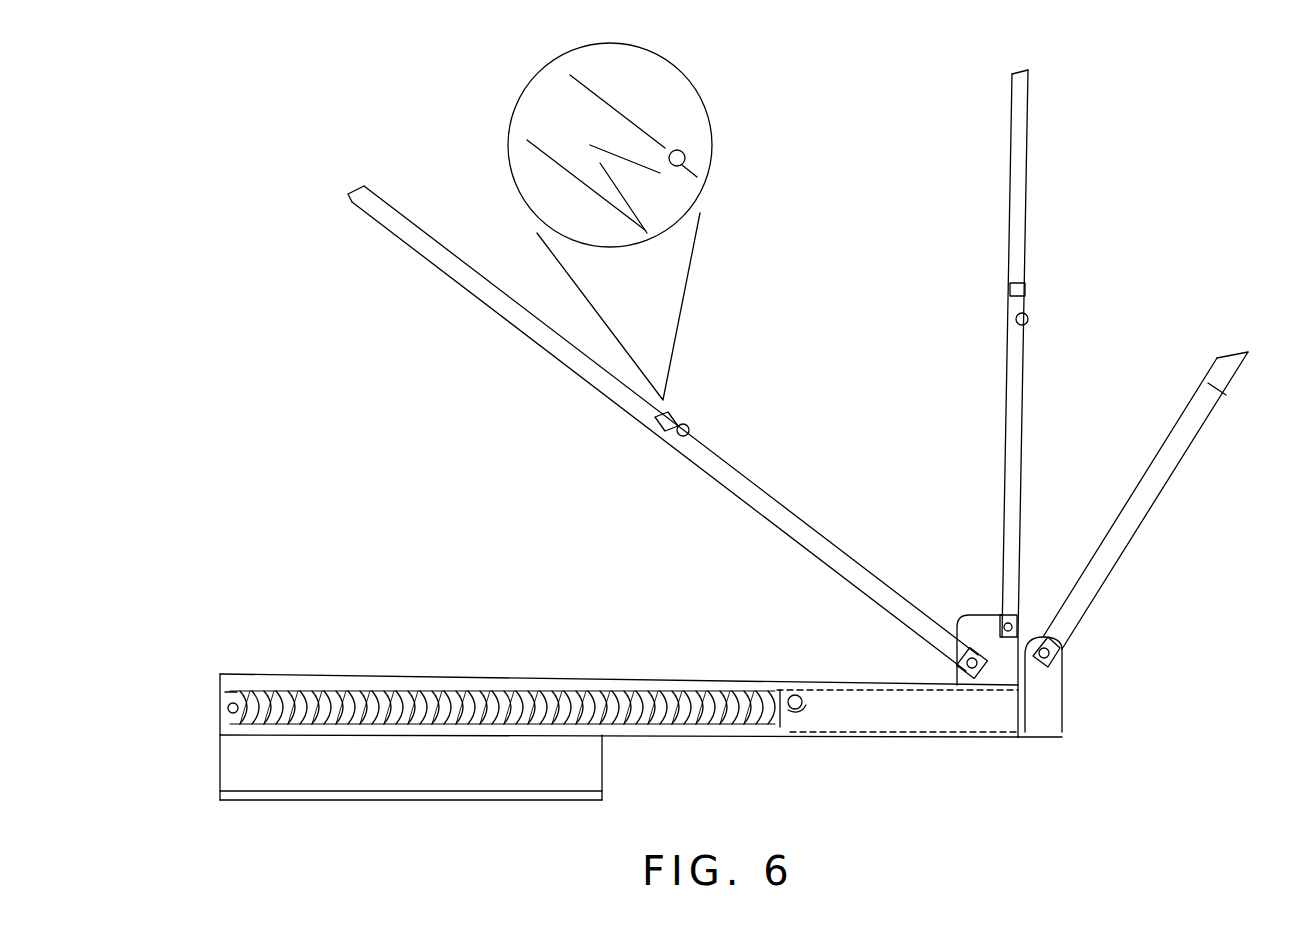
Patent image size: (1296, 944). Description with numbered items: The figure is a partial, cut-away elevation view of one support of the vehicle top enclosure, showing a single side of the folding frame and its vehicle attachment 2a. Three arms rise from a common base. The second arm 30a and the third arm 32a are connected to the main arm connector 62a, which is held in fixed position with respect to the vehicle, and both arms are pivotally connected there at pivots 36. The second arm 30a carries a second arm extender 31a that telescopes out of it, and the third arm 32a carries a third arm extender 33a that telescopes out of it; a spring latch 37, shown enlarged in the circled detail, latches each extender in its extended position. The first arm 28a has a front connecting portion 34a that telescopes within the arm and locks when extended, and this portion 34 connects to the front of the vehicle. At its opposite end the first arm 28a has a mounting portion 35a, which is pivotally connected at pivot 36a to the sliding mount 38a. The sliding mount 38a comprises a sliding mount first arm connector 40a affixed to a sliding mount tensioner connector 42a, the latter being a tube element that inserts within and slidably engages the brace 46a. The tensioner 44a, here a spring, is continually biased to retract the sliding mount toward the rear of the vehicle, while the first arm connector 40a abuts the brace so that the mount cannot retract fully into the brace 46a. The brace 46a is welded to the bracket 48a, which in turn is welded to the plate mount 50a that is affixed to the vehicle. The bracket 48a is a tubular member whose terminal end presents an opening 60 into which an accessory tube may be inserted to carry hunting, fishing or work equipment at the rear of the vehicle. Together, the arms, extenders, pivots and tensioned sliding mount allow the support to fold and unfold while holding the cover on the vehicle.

The folding device 2a is at (1213, 124).
The first arm 28a is at (1146, 474).
The second arm 30a is at (1007, 353).
The second arm extender 31a is at (1020, 172).
The third arm 32a is at (663, 428).
The third arm extender 33a is at (497, 300).
The front connecting portion 34a is at (1250, 349).
The mounting portion 35a is at (1096, 641).
The pivot 36a is at (1063, 640).
The spring latch 37 is at (677, 72).
The sliding mount 38a is at (1030, 740).
The sliding mount first arm connector 40a is at (1053, 672).
The sliding mount tensioner connector 42a is at (873, 705).
The tensioner 44a is at (713, 700).
The brace 46a is at (477, 678).
The bracket 48a is at (480, 780).
The plate mount 50a is at (573, 797).
The opening 60 is at (619, 751).
The main arm connector 62a is at (977, 613).
The pivot 36 is at (999, 614).
The front connecting portion 34 is at (975, 615).